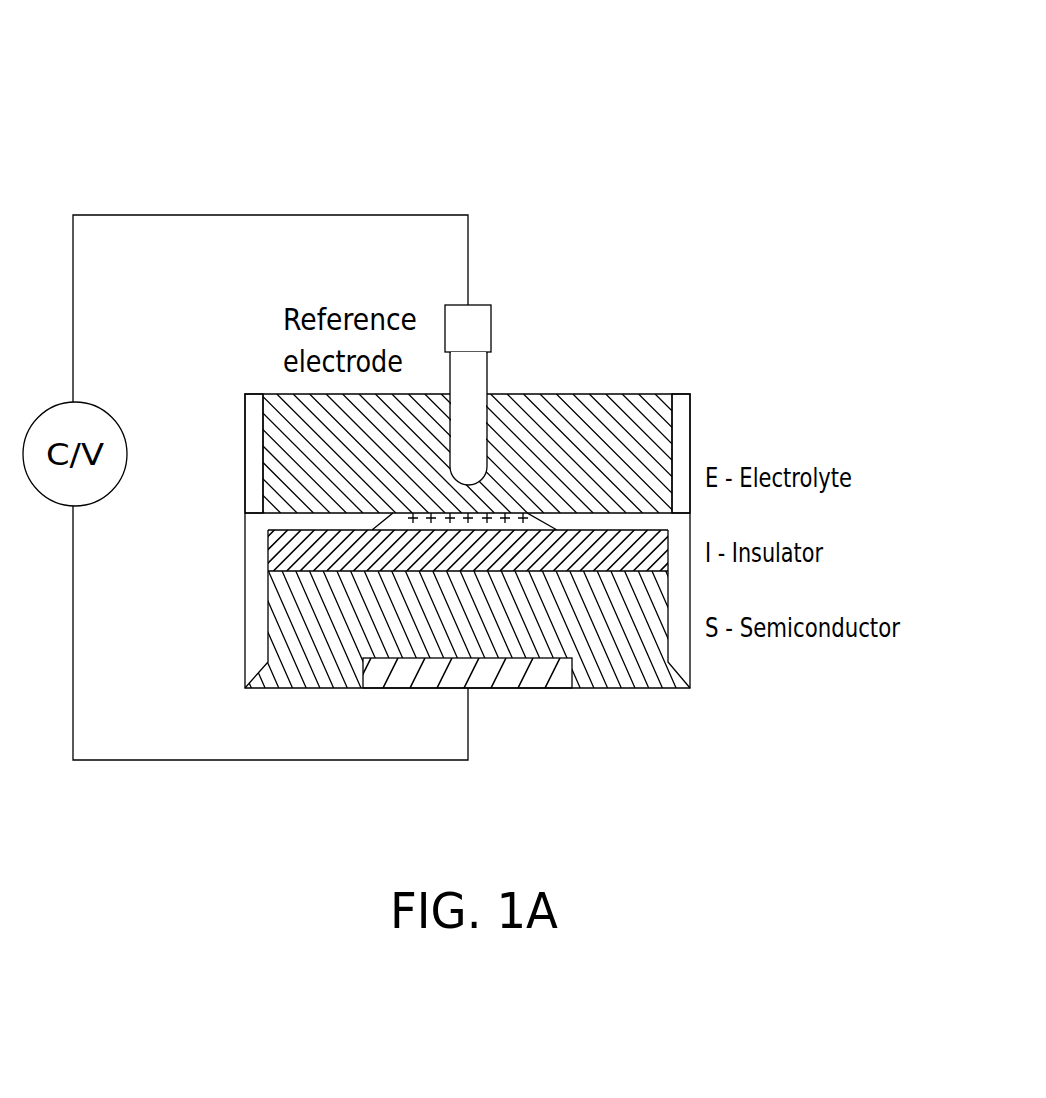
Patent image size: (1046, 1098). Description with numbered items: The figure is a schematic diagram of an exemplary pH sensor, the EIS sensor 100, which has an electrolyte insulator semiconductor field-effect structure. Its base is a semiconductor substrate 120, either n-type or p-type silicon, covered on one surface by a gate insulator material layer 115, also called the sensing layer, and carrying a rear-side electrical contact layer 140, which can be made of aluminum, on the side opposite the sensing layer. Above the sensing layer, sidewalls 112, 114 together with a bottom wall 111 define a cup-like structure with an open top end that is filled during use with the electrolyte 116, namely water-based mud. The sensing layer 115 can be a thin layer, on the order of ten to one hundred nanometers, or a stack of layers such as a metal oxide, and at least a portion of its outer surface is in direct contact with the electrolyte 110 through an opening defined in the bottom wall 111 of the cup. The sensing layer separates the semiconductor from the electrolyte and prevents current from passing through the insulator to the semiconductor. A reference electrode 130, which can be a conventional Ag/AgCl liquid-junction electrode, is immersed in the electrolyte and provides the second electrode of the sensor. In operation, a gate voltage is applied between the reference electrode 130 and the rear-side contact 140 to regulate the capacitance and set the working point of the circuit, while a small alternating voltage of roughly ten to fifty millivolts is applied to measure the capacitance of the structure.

The EIS sensor 100 is at (608, 95).
The electrolyte 110 is at (603, 393).
The bottom wall 111 is at (612, 513).
The sidewall 112 is at (245, 425).
The sidewall 114 is at (692, 420).
The gate insulator material layer 115 is at (275, 551).
The electrolyte 116 is at (505, 473).
The semiconductor substrate 120 is at (602, 690).
The reference electrode 130 is at (481, 305).
The rear-side electrical contact layer 140 is at (477, 690).